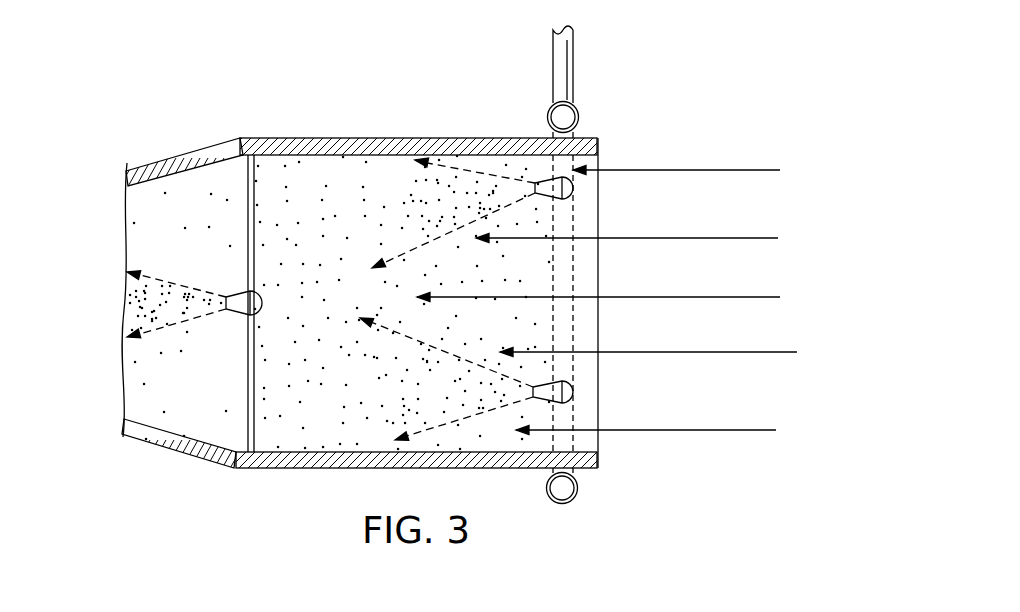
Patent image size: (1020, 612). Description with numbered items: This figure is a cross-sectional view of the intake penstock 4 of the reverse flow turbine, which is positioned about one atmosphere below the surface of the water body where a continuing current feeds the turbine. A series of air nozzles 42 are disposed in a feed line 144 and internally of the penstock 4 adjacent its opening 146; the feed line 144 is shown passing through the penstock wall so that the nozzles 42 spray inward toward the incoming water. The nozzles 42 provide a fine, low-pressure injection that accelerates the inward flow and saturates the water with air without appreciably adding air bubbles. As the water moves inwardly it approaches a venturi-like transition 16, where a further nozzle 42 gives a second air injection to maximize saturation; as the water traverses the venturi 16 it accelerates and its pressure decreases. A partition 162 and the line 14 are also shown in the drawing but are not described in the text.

The penstock 4 is at (482, 136).
The venturi-like transition 16 is at (178, 152).
The partition plate 162 is at (246, 133).
The air nozzles 42 is at (574, 190).
The supply pipe 14 is at (573, 58).
The feed line 144 is at (566, 503).
The opening 146 is at (593, 440).